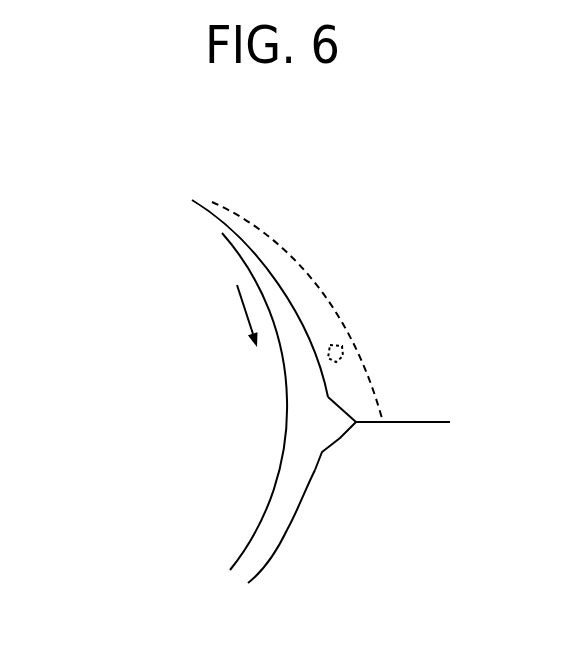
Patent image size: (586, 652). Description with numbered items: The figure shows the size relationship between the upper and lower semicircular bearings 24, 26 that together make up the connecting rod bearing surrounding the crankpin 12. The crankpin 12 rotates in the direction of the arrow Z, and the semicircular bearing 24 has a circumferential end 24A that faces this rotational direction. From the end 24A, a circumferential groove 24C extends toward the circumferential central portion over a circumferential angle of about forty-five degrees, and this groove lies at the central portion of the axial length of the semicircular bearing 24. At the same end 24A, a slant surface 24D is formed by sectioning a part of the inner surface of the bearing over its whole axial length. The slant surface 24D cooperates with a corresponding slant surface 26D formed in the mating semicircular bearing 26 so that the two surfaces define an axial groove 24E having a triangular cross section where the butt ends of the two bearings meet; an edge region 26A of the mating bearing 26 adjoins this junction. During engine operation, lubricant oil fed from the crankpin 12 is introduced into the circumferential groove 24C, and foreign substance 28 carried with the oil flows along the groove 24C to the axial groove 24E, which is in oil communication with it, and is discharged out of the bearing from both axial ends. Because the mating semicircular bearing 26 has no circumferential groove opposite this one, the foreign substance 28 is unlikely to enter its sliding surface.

The crankpin 12 is at (257, 528).
The semicircular bearing 24 is at (318, 246).
The circumferential end 24A is at (433, 430).
The circumferential groove 24C is at (252, 249).
The slant surface 24D is at (328, 397).
The axial groove 24E is at (337, 425).
The semicircular bearing 26 is at (346, 542).
The platform upper surface 26A is at (408, 420).
The slant surface 26D is at (335, 445).
The foreign substance 28 is at (337, 343).
The rotational direction of the crankpin Z is at (240, 304).